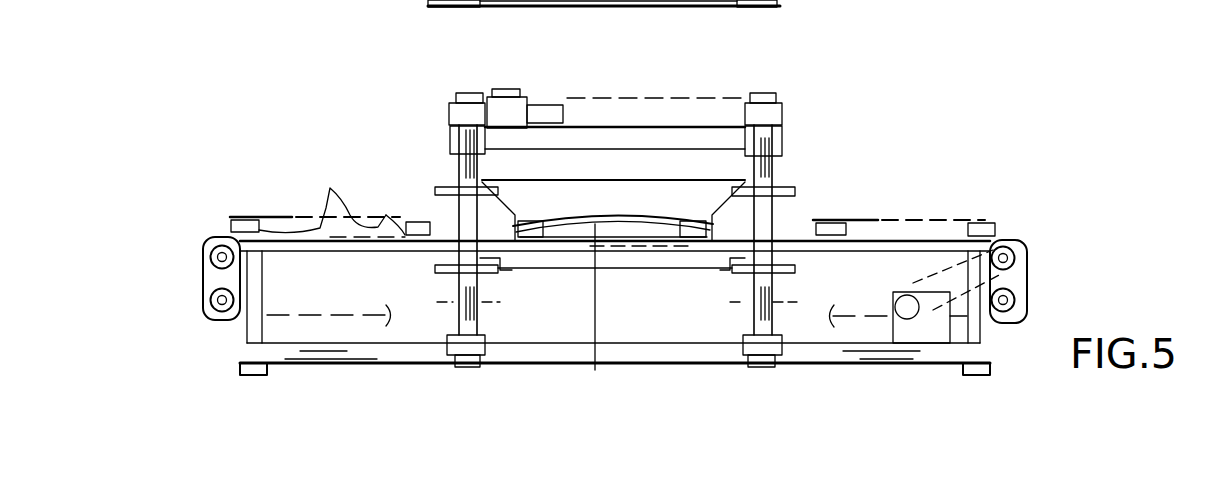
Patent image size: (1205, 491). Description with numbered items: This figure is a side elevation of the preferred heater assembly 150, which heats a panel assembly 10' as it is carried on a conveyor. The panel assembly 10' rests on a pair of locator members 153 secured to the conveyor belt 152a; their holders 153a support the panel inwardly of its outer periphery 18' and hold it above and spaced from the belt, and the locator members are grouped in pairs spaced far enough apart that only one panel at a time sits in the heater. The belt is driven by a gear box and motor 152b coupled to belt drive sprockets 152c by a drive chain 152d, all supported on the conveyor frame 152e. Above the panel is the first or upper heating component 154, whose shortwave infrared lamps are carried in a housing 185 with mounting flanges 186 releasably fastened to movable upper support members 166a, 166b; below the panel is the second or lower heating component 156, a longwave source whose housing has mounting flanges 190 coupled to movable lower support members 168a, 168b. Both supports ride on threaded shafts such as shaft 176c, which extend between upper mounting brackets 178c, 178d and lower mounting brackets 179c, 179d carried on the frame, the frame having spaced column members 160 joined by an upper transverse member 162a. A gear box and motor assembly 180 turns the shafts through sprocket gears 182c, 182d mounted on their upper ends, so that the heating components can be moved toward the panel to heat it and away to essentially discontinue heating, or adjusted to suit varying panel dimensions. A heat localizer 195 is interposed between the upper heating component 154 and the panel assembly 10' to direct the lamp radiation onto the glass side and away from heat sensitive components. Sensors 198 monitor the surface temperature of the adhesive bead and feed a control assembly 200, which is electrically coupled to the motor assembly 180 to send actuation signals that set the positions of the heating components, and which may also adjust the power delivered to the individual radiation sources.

The panel assembly 10' is at (418, 263).
The outer periphery 18' is at (162, 180).
The heater assembly 150 is at (887, 96).
The conveyor belt 152a is at (1005, 240).
The gear box and motor 152b is at (930, 333).
The belt drive sprockets 152c is at (1025, 257).
The drive chain 152d is at (1020, 283).
The conveyor frame 152e is at (813, 353).
The locator members 153 is at (228, 228).
The holders 153a is at (322, 196).
The upper heating component 154 is at (576, 168).
The lower heating component 156 is at (614, 282).
The column members 160 is at (437, 165).
The upper transverse member 162a is at (610, 5).
The upper support member 166a is at (420, 184).
The upper support member 166b is at (808, 178).
The lower support member 168a is at (500, 302).
The lower support member 168b is at (815, 266).
The threaded shaft 176c is at (507, 8).
The upper mounting bracket 178c is at (440, 15).
The upper mounting bracket 178d is at (745, 22).
The lower mounting bracket 179c is at (447, 330).
The lower mounting bracket 179d is at (722, 340).
The gear box and motor assembly 180 is at (538, 88).
The sprocket gear 182c is at (352, 0).
The sprocket gear 182d is at (807, 0).
The housing 185 is at (630, 177).
The mounting flanges 186 is at (728, 183).
The mounting flanges 190 is at (490, 268).
The heat localizer 195 is at (653, 208).
The sensors 198 is at (478, 232).
The control assembly 200 is at (460, 207).